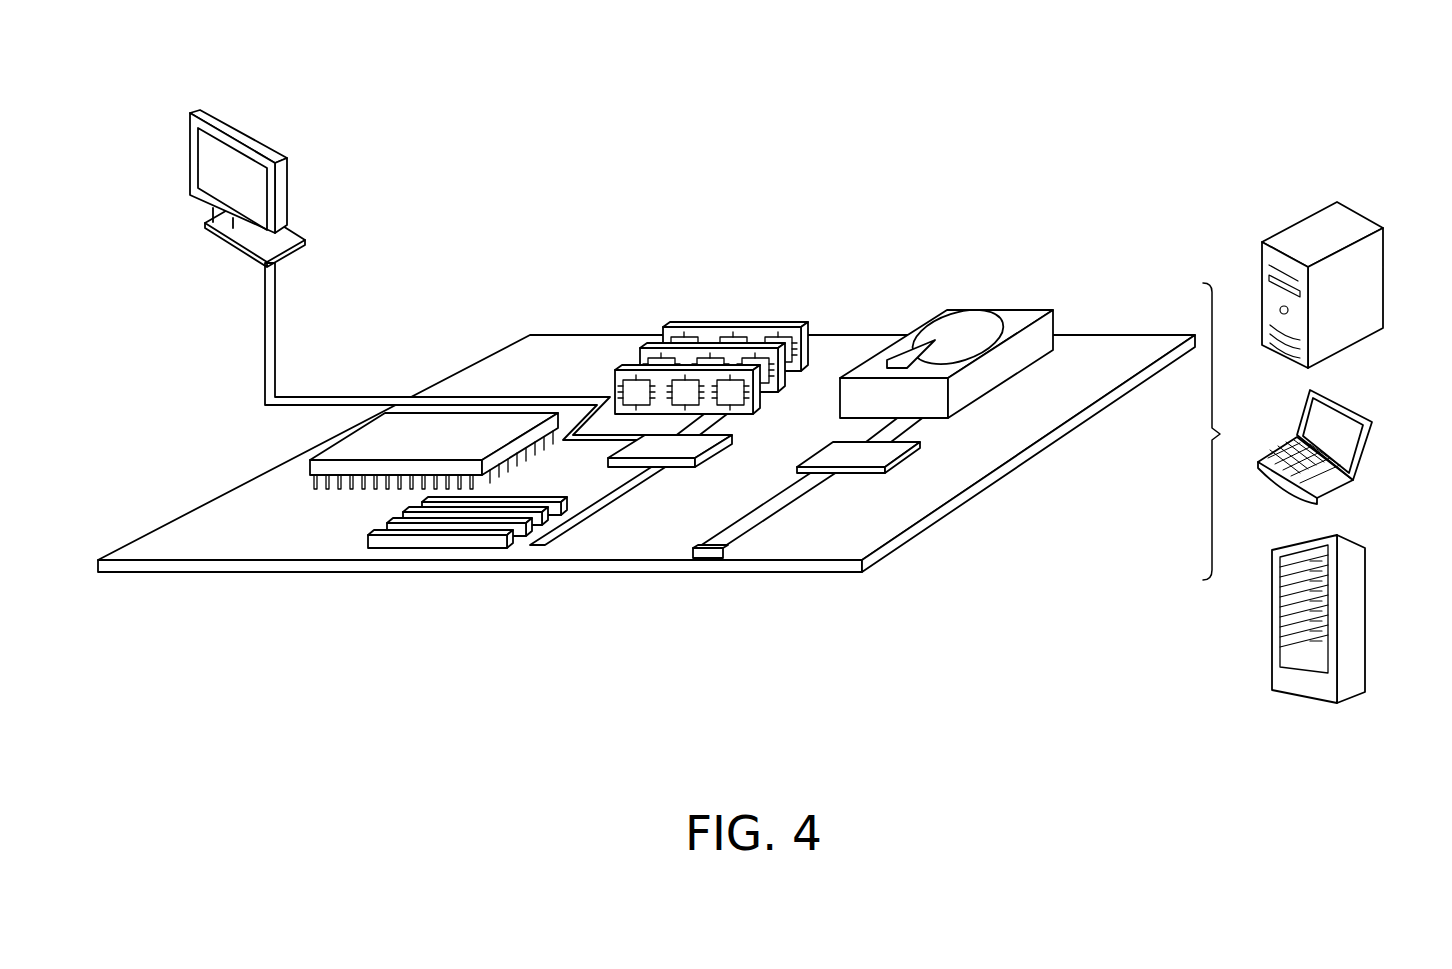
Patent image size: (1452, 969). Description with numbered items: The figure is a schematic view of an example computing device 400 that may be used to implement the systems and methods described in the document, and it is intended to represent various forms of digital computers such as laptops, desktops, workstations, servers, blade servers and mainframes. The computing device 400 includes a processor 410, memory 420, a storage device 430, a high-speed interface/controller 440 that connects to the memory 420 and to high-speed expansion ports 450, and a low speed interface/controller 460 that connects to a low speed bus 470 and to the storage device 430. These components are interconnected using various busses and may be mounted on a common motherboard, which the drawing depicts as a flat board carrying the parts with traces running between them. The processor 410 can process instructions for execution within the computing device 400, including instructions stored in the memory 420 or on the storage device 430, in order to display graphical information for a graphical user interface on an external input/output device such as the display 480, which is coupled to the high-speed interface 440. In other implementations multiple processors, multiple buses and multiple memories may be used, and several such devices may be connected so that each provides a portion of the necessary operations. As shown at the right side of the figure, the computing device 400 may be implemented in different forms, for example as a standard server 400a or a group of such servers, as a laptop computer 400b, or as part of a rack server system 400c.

The computing device 400 is at (1019, 80).
The processor 410 is at (310, 462).
The memory 420 is at (728, 327).
The storage device 430 is at (993, 310).
The high-speed interface/controller 440 is at (677, 467).
The high-speed expansion ports 450 is at (368, 540).
The low speed interface/controller 460 is at (847, 445).
The low speed bus 470 is at (723, 560).
The display 480 is at (190, 165).
The standard server 400a is at (1297, 222).
The laptop computer 400b is at (1352, 401).
The rack server system 400c is at (1363, 598).